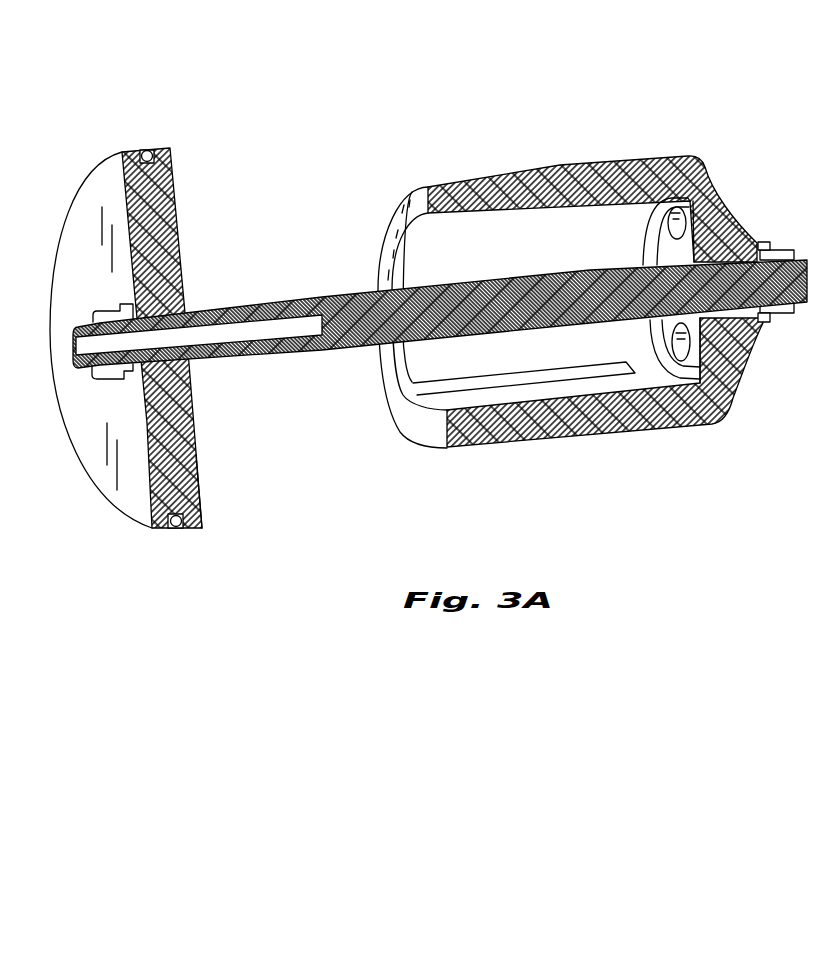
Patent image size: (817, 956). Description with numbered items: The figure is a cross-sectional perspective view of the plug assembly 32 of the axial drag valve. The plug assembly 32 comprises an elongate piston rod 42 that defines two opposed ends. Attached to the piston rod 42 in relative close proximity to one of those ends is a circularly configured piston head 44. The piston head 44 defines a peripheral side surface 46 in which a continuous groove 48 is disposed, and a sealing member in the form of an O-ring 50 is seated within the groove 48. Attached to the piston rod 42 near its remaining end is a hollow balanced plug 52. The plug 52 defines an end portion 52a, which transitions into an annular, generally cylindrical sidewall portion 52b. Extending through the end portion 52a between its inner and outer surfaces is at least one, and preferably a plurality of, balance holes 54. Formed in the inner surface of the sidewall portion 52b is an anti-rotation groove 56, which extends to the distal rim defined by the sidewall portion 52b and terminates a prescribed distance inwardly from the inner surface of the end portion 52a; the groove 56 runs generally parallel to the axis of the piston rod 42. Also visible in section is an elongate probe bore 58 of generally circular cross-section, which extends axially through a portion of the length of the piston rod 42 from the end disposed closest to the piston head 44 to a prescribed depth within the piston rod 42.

The plug assembly 32 is at (336, 197).
The piston rod 42 is at (440, 304).
The piston head 44 is at (183, 408).
The peripheral side surface 46 is at (197, 532).
The groove 48 is at (188, 504).
The O-ring 50 is at (147, 150).
The balanced plug 52 is at (586, 310).
The end portion 52a is at (725, 367).
The sidewall portion 52b is at (518, 172).
The balance holes 54 is at (669, 197).
The anti-rotation groove 56 is at (413, 386).
The probe bore 58 is at (254, 323).